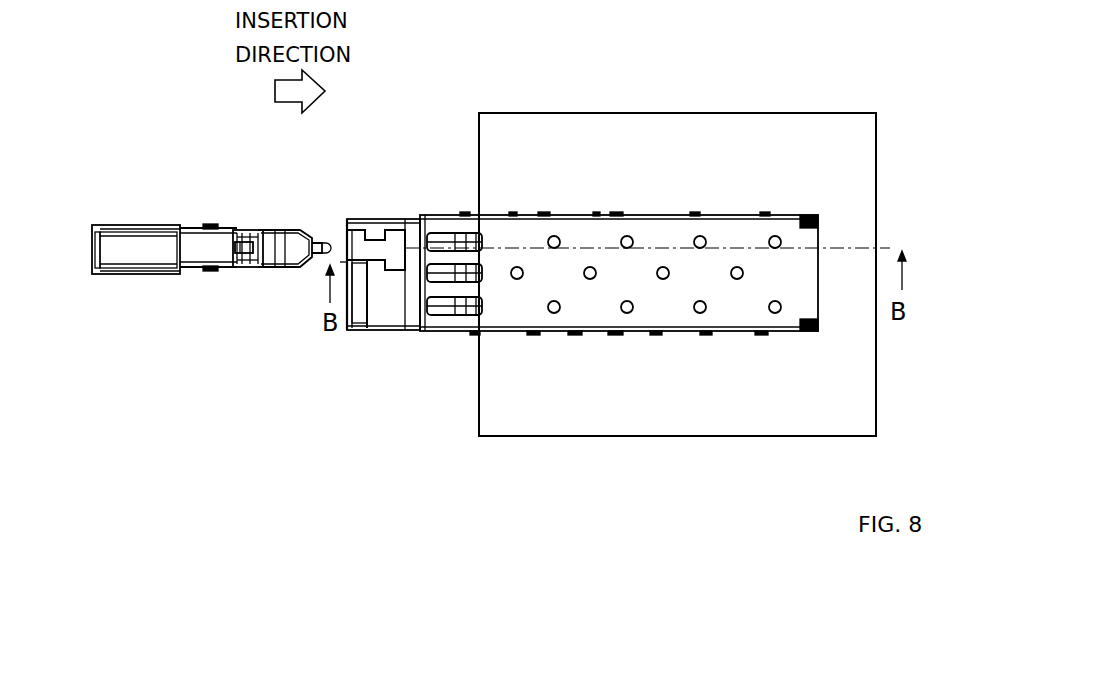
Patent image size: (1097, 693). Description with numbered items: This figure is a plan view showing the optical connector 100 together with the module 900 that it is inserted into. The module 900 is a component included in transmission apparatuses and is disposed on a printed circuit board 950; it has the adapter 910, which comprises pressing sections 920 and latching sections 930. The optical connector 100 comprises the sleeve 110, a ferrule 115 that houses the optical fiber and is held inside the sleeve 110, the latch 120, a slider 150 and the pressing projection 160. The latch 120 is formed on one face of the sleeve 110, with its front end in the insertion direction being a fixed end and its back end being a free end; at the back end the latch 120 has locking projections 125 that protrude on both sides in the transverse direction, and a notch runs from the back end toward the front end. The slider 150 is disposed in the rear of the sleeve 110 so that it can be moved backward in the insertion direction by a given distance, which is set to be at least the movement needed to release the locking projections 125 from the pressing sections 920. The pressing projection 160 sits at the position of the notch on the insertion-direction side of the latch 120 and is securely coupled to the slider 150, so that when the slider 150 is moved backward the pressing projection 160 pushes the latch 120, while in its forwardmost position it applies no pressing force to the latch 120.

The optical connector 100 is at (110, 233).
The sleeve 110 is at (290, 263).
The ferrule 115 is at (327, 240).
The latch 120 is at (280, 240).
The locking projections 125 is at (253, 267).
The slider 150 is at (125, 270).
The pressing projection 160 is at (257, 228).
The module 900 is at (647, 238).
The adapter 910 is at (360, 224).
The pressing sections 920 is at (375, 230).
The latching sections 930 is at (400, 221).
The printed circuit board 950 is at (822, 127).